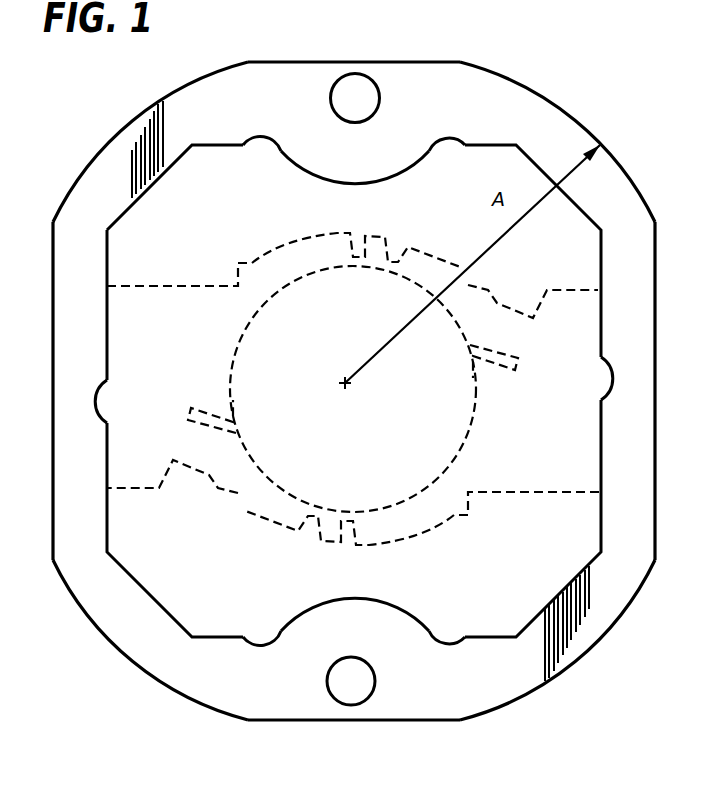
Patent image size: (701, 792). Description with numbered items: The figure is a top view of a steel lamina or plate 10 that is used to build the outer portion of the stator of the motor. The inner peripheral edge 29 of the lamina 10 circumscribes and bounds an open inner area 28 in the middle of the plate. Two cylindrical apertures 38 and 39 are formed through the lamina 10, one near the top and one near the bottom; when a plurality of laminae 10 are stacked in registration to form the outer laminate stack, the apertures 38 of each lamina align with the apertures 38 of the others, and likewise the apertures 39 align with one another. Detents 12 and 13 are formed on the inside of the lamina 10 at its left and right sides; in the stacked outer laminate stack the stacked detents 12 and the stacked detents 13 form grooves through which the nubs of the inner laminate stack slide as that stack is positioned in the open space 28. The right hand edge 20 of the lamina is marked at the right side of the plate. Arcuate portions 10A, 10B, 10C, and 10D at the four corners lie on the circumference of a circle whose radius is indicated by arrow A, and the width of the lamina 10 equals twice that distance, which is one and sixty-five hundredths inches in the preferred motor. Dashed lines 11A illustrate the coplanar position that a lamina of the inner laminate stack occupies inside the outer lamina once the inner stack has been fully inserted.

The steel lamina 10 is at (527, 75).
The arcuate portion 10A is at (101, 152).
The arcuate portion 10B is at (612, 160).
The arcuate portion 10C is at (590, 645).
The arcuate portion 10D is at (110, 637).
The dashed lines 11A is at (541, 508).
The detent 12 is at (97, 386).
The detent 13 is at (609, 368).
The right hand edge 20 is at (656, 412).
The open inner area 28 is at (229, 160).
The inner peripheral edge 29 is at (482, 143).
The cylindrical aperture 38 is at (379, 112).
The cylindrical aperture 39 is at (345, 658).